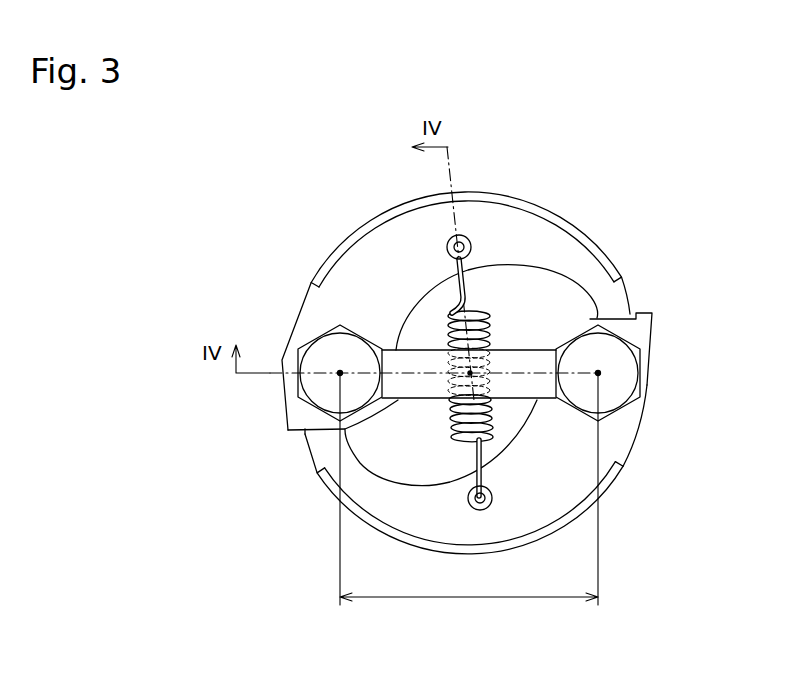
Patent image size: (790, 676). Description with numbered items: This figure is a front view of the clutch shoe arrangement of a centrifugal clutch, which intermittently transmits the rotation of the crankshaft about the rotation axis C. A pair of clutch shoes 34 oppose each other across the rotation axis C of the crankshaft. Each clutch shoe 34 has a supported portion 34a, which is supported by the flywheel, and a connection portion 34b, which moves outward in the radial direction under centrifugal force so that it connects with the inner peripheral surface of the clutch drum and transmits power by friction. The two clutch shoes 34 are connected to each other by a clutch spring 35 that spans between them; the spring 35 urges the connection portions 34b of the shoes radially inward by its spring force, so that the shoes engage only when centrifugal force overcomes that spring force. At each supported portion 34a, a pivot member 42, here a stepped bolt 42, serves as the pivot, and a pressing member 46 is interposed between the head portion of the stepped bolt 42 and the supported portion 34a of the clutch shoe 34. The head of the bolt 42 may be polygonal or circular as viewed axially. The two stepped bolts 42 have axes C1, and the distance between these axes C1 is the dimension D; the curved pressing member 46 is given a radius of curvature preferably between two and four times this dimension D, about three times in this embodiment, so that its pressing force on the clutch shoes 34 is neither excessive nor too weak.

The clutch shoe 34 is at (303, 300).
The supported portion 34a is at (283, 390).
The connection portion 34b is at (488, 195).
The clutch spring 35 is at (482, 316).
The pivot member (stepped bolt) 42 is at (323, 393).
The pressing member 46 is at (521, 336).
The rotation axis of the crankshaft C is at (460, 395).
The axis of the stepped bolt C1 is at (339, 373).
The distance between the axes of the stepped bolts D is at (469, 489).